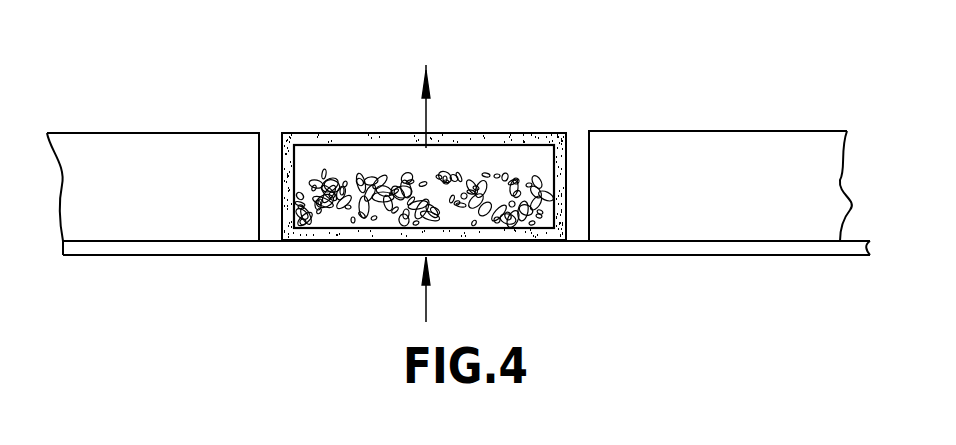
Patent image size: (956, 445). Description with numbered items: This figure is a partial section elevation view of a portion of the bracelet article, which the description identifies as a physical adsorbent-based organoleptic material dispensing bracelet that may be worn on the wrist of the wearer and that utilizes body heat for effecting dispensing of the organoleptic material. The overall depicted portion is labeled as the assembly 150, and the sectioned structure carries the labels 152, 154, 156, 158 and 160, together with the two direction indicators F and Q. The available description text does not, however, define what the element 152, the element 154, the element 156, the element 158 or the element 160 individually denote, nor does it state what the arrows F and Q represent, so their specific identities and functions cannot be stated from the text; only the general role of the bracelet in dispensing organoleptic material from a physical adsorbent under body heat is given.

The sintering apparatus assembly 150 is at (227, 72).
The crucible / container 152 is at (522, 133).
The base plate 154 is at (217, 250).
The inner liner of container 156 is at (382, 145).
The insulating wall of container 158 is at (323, 152).
The particulate charge material 160 is at (480, 170).
The applied force direction F is at (428, 110).
The heat flow direction Q is at (427, 312).